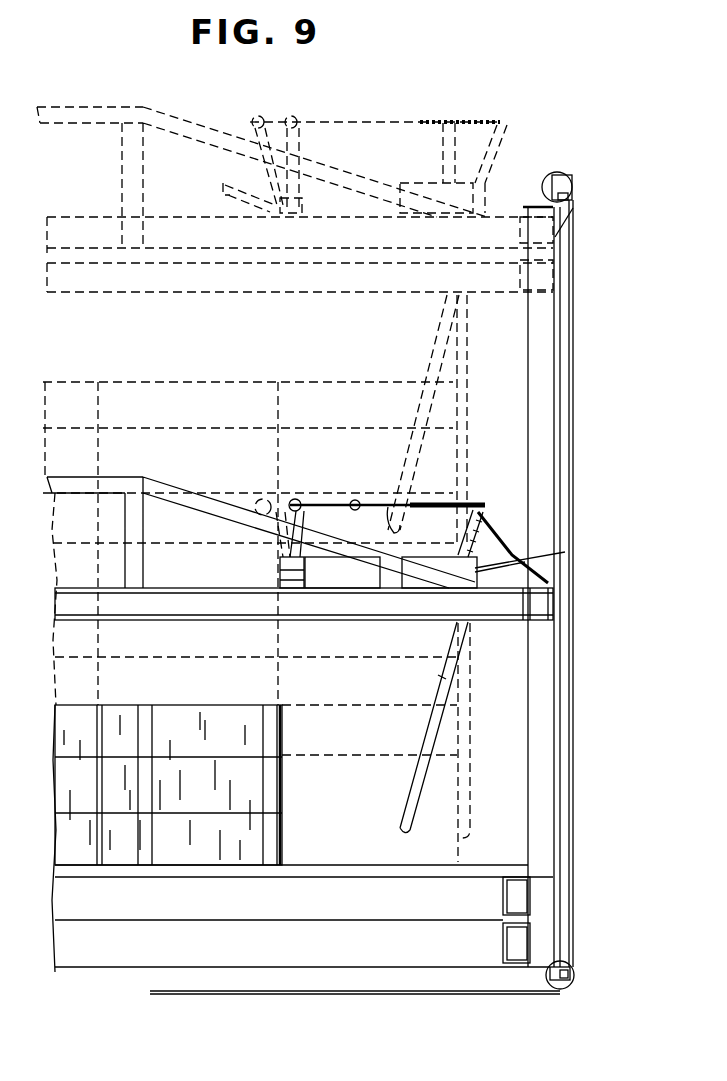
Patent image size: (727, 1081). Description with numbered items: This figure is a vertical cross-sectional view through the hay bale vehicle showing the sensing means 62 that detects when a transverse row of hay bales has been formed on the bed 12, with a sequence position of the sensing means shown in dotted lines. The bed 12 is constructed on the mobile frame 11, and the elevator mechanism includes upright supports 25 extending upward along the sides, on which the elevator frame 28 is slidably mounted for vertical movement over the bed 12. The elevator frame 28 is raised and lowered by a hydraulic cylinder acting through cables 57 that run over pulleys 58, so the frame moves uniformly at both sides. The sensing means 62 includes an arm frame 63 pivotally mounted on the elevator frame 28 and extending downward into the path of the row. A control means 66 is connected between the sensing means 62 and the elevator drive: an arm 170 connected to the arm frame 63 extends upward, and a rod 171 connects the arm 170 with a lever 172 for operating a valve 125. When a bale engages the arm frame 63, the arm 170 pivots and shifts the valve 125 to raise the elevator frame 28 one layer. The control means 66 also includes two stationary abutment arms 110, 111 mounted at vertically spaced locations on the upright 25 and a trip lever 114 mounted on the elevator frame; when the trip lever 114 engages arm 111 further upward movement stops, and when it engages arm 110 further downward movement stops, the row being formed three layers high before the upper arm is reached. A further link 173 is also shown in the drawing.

The mobile frame 11 is at (80, 980).
The bed 12 is at (425, 870).
The upright supports 25 is at (555, 716).
The elevator frame 28 is at (193, 128).
The cables 57 is at (574, 865).
The pulleys 58 is at (557, 182).
The sensing means 62 is at (450, 666).
The arm frame 63 is at (398, 462).
The control means 66 is at (496, 137).
The abutment arm 110 is at (560, 561).
The abutment arm 111 is at (573, 193).
The trip lever 114 is at (486, 194).
The valve 125 is at (340, 578).
The arm 170 is at (488, 164).
The rod 171 is at (311, 362).
The lever 172 is at (297, 150).
The bar 173 is at (520, 553).